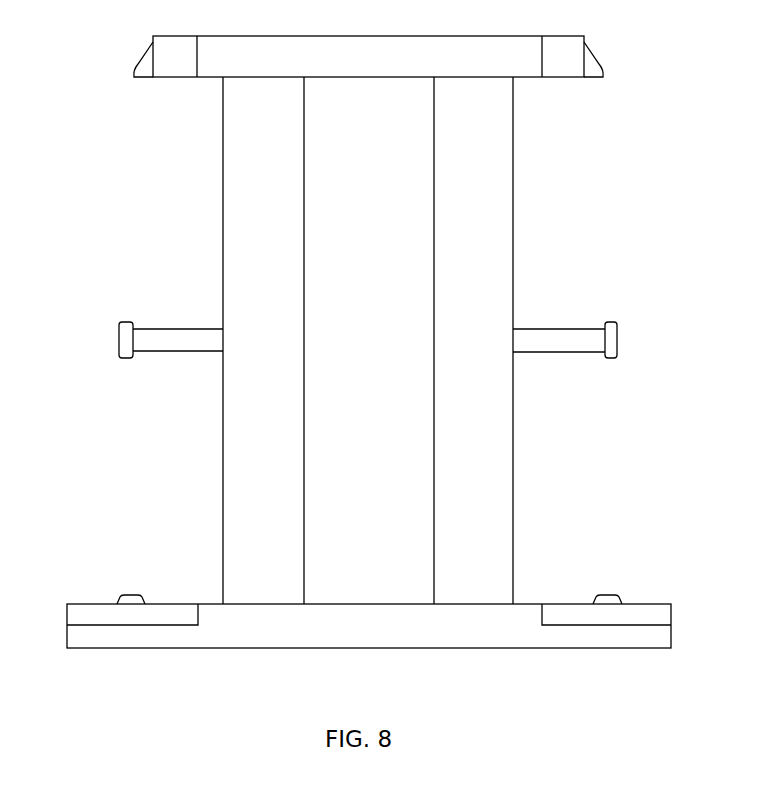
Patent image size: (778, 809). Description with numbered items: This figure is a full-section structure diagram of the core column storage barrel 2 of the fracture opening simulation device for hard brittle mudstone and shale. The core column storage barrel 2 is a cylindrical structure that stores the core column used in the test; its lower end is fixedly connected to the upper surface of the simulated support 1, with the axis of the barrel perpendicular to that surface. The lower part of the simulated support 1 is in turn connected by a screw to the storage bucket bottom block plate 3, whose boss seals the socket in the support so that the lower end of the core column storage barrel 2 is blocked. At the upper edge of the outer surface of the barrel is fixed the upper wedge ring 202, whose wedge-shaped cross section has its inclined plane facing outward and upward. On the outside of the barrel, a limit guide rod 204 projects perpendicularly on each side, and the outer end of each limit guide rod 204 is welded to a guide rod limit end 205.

The simulated support 1 is at (577, 615).
The core column storage barrel 2 is at (353, 552).
The storage bucket bottom block plate 3 is at (267, 648).
The upper wedge ring 202 is at (143, 80).
The limit guide rod 204 is at (190, 340).
The guide rod limit end 205 is at (120, 358).